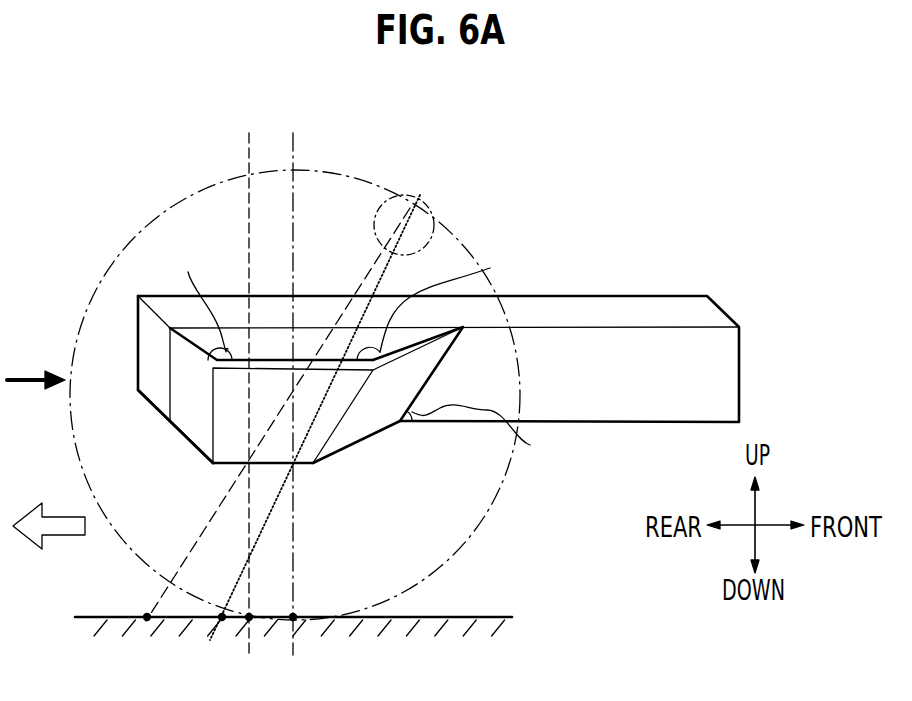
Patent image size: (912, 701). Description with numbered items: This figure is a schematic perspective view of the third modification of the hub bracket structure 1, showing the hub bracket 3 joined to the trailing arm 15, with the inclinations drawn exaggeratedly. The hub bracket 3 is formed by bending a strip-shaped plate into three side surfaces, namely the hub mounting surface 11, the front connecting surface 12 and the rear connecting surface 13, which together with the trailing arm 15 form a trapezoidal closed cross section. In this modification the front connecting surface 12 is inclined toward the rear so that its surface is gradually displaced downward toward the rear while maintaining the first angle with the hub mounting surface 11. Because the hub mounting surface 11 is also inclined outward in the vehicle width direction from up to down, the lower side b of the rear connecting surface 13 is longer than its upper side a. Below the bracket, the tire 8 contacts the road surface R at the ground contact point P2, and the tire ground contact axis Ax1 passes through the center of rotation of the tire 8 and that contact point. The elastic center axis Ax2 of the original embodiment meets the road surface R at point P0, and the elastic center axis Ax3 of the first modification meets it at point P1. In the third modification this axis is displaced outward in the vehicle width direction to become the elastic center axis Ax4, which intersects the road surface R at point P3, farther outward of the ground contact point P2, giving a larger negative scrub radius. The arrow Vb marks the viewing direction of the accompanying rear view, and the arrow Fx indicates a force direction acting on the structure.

The hub bracket structure 1 is at (418, 323).
The hub bracket 3 is at (325, 384).
The tire 8 is at (503, 482).
The hub mounting surface 11 is at (228, 466).
The front connecting surface 12 is at (408, 406).
The rear connecting surface 13 is at (187, 421).
The trailing arm 15 is at (672, 298).
The upper side a is at (200, 352).
The lower side b is at (190, 445).
The tire ground contact axis Ax1 is at (296, 148).
The elastic center axis Ax2 is at (247, 148).
The elastic center axis Ax3 is at (411, 205).
The elastic center axis Ax4 is at (437, 222).
The road surface R is at (458, 615).
The point P0 is at (250, 618).
The point P1 is at (147, 617).
The ground contact point P2 is at (347, 614).
The point P3 is at (222, 617).
The direction Vb is at (36, 395).
The force arrow Fx is at (63, 538).